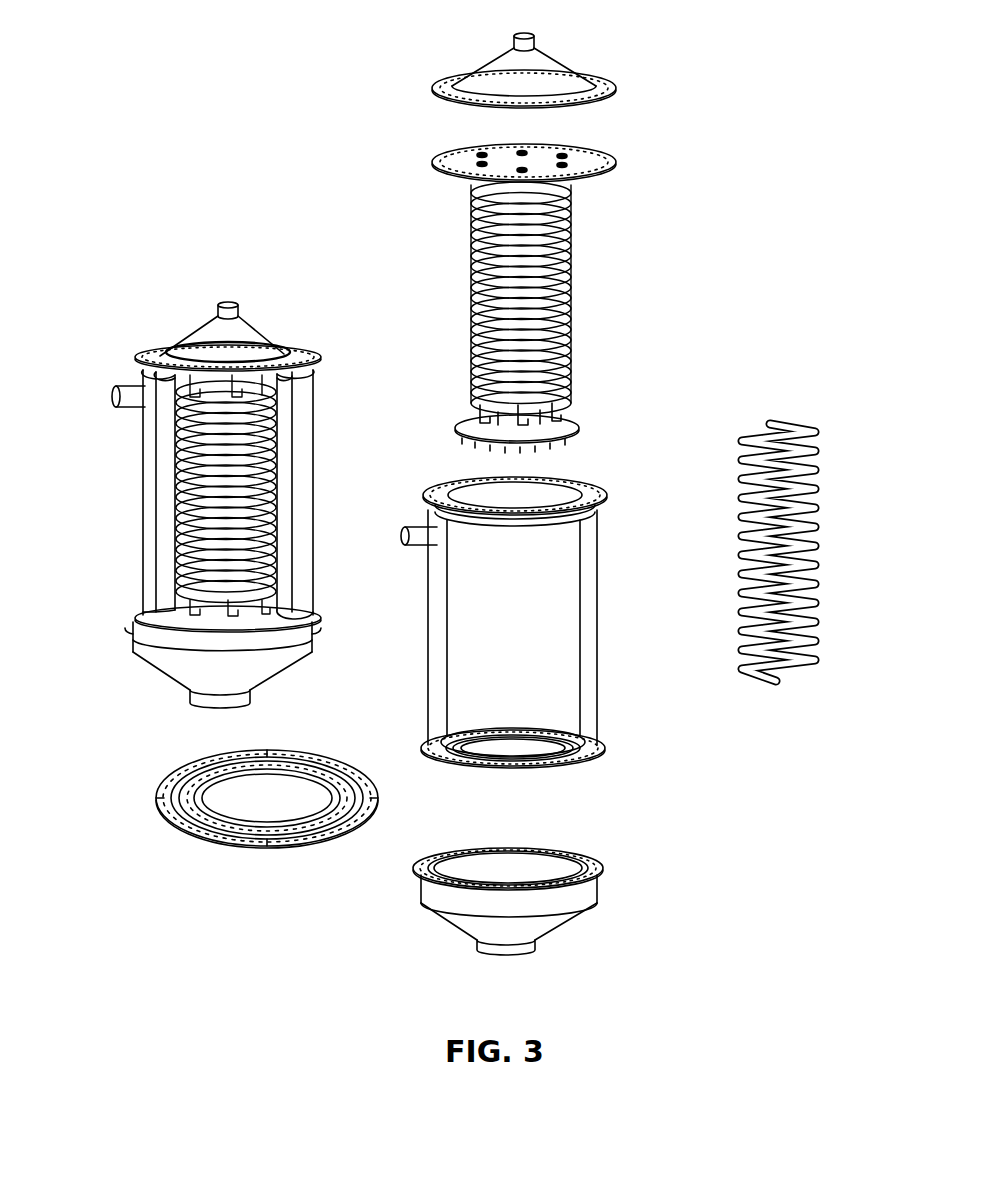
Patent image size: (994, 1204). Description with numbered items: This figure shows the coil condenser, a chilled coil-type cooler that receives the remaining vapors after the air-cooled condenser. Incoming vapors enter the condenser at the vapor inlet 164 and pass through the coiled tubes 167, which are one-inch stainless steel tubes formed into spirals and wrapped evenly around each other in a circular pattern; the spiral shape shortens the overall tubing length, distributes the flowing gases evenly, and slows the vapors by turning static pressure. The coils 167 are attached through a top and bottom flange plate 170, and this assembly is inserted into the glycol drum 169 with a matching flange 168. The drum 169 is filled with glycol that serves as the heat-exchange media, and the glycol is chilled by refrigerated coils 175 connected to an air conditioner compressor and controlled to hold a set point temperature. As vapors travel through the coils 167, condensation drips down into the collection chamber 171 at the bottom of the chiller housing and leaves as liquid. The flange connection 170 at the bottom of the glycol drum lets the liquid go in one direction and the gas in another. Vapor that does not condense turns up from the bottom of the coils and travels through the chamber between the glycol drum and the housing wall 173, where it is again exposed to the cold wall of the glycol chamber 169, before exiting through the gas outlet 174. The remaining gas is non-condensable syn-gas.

The vapor inlet 164 is at (228, 302).
The coiled tubes 167 is at (572, 248).
The matching flange 168 is at (568, 416).
The glycol drum 169 is at (535, 653).
The flange plate 170 is at (228, 800).
The collection chamber 171 is at (562, 898).
The housing wall 173 is at (300, 470).
The gas outlet 174 is at (113, 390).
The refrigerated coils 175 is at (283, 522).